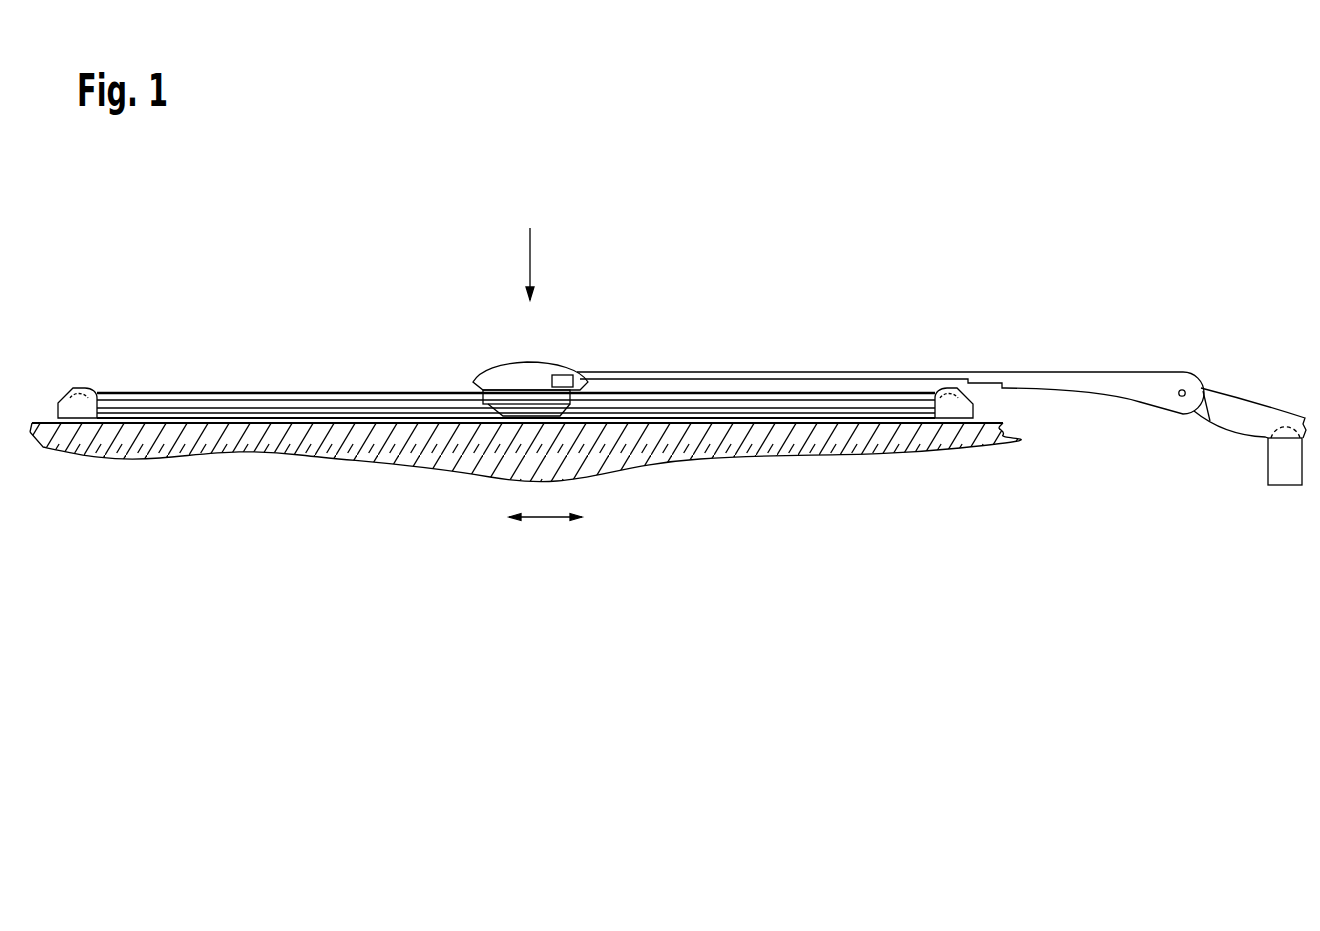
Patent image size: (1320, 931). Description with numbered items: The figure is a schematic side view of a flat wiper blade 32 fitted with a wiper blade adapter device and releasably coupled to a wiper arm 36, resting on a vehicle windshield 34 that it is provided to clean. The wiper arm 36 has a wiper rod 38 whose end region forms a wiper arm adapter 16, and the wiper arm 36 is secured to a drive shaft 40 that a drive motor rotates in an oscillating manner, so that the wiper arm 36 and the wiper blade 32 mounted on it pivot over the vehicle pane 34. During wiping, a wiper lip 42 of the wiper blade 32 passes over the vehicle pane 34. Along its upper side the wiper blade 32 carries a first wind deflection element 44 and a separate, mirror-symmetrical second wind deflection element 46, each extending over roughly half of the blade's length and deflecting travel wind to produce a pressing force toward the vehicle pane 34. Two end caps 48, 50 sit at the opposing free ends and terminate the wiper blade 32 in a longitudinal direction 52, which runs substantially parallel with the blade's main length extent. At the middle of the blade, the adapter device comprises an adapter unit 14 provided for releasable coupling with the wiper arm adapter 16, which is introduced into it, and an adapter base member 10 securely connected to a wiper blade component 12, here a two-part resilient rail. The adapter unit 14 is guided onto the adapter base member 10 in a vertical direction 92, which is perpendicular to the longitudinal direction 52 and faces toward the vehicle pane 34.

The adapter base member 10 is at (682, 412).
The wiper blade component 12 is at (630, 410).
The adapter unit 14 is at (533, 341).
The wiper arm adapter 16 is at (583, 365).
The wiper blade 32 is at (515, 412).
The vehicle windshield 34 is at (525, 474).
The wiper arm 36 is at (941, 372).
The wiper rod 38 is at (762, 380).
The drive shaft 40 is at (1285, 466).
The wiper lip 42 is at (302, 423).
The first wind deflection element 44 is at (216, 400).
The second wind deflection element 46 is at (713, 400).
The end cap 48 is at (80, 395).
The end cap 50 is at (946, 400).
The longitudinal direction 52 is at (544, 520).
The vertical direction 92 is at (531, 254).